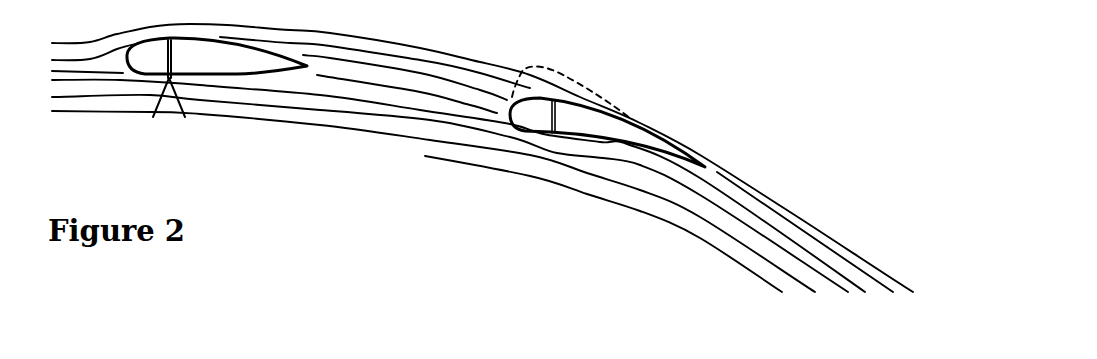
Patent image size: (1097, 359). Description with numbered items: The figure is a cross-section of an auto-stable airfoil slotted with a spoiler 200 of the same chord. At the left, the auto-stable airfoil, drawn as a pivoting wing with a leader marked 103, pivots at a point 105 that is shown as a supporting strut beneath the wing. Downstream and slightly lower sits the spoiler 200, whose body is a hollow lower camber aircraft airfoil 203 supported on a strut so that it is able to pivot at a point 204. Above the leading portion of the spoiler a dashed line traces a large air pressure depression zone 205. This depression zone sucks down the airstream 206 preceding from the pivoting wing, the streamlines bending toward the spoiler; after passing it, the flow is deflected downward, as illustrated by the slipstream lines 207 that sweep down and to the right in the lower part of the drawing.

The first hydrofoil 103 is at (230, 57).
The pivot point 105 is at (160, 75).
The spoiler 200 is at (600, 127).
The hollow lower camber aircraft airfoil 203 is at (568, 122).
The pivot point 204 is at (554, 133).
The air pressure depression zone 205 is at (537, 66).
The airstream 206 is at (408, 88).
The slipstream lines 207 is at (793, 247).